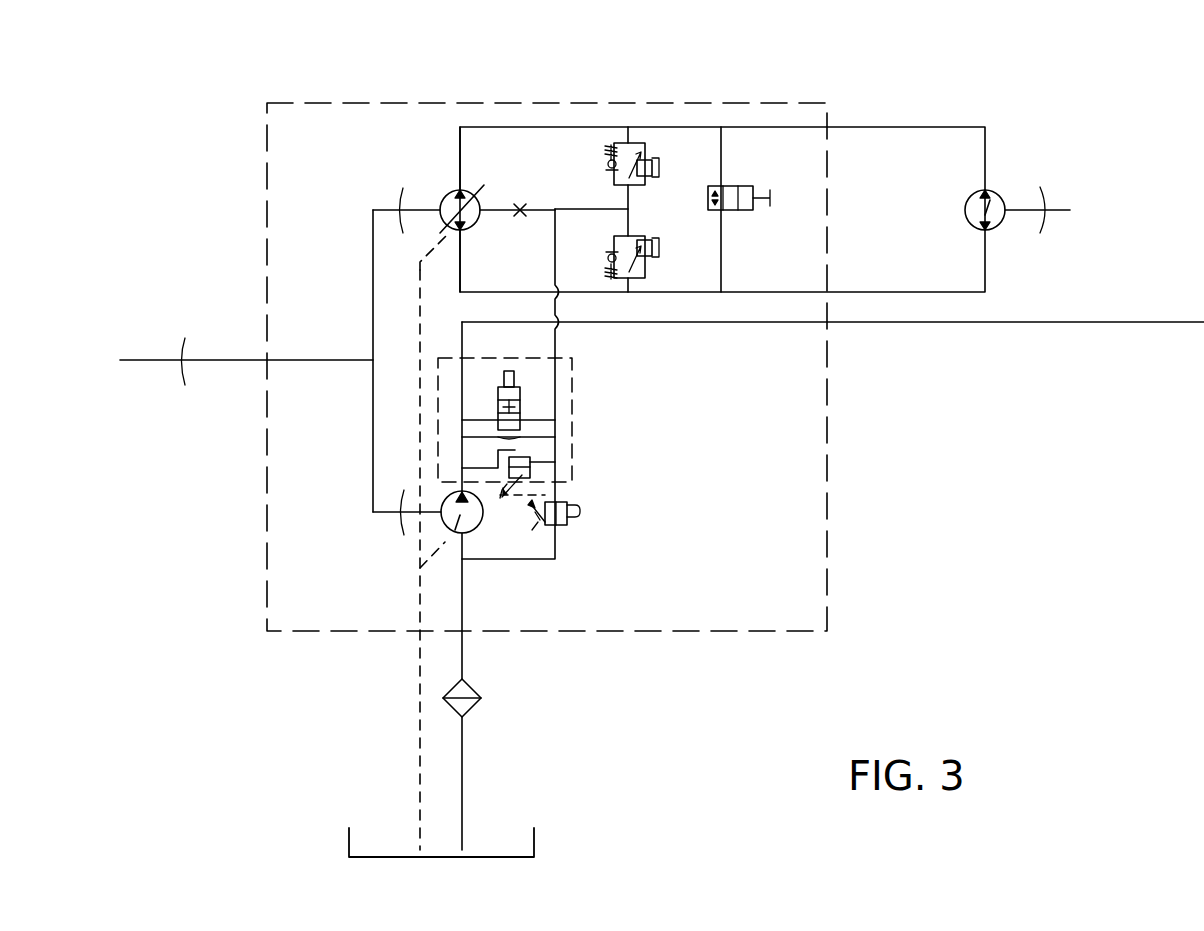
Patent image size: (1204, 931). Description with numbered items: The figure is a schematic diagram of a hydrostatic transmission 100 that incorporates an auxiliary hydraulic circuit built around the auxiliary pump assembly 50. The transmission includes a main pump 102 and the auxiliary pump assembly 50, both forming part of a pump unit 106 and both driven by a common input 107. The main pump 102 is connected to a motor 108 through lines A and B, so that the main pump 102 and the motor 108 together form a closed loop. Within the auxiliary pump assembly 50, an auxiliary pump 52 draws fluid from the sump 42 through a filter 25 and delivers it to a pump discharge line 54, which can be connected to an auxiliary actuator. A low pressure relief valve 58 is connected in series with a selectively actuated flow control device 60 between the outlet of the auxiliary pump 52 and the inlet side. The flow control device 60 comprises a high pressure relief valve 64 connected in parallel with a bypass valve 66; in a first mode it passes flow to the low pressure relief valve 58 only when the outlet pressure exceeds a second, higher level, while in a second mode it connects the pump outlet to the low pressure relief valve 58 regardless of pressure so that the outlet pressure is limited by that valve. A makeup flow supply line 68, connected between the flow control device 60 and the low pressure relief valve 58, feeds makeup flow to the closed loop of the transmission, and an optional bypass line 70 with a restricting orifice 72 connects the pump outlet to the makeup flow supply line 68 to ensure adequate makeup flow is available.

The hydrostatic transmission 100 is at (565, 97).
The pump unit 106 is at (721, 102).
The main pump 102 is at (452, 192).
The motor 108 is at (993, 195).
The common input 107 is at (152, 334).
The pump discharge line 54 is at (985, 324).
The auxiliary pump assembly 50 is at (630, 500).
The flow control device 60 is at (573, 410).
The makeup flow supply line 68 is at (573, 370).
The bypass valve 66 is at (520, 395).
The restricting orifice 72 is at (522, 448).
The high pressure relief valve 64 is at (530, 460).
The bypass line 70 is at (470, 437).
The auxiliary pump 52 is at (455, 518).
The low pressure relief valve 58 is at (578, 522).
The filter 25 is at (475, 706).
The sump 42 is at (540, 838).